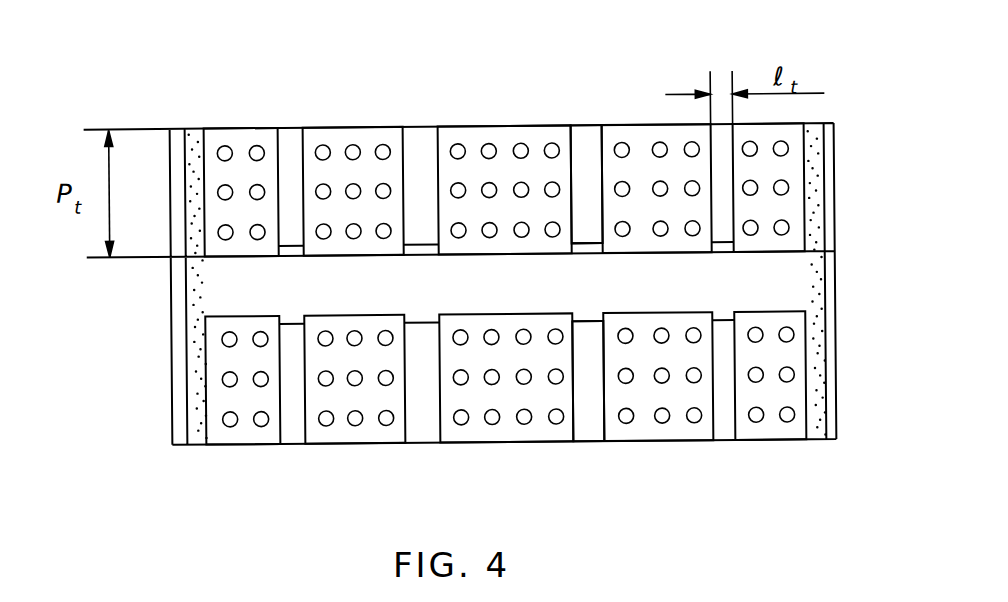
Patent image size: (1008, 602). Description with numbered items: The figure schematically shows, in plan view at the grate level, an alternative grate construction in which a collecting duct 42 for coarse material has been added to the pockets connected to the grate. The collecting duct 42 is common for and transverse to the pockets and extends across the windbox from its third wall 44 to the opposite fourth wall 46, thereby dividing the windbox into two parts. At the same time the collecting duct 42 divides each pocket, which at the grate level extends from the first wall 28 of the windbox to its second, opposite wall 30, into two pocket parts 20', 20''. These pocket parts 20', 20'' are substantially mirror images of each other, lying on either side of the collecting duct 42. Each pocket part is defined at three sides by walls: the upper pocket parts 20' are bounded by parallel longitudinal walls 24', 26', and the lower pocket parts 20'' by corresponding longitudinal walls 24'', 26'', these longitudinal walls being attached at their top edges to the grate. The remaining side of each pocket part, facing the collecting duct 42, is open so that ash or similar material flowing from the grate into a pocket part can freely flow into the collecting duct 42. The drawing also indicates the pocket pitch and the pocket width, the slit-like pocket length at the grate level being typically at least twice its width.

The pocket part 20' is at (621, 137).
The pocket part 20'' is at (586, 421).
The longitudinal wall 24' is at (253, 155).
The longitudinal wall 24'' is at (247, 418).
The longitudinal wall 26' is at (353, 146).
The longitudinal wall 26'' is at (361, 416).
The first wall 28 is at (477, 126).
The second wall 30 is at (469, 441).
The collecting duct 42 is at (785, 270).
The third wall 44 is at (203, 290).
The fourth wall 46 is at (804, 278).